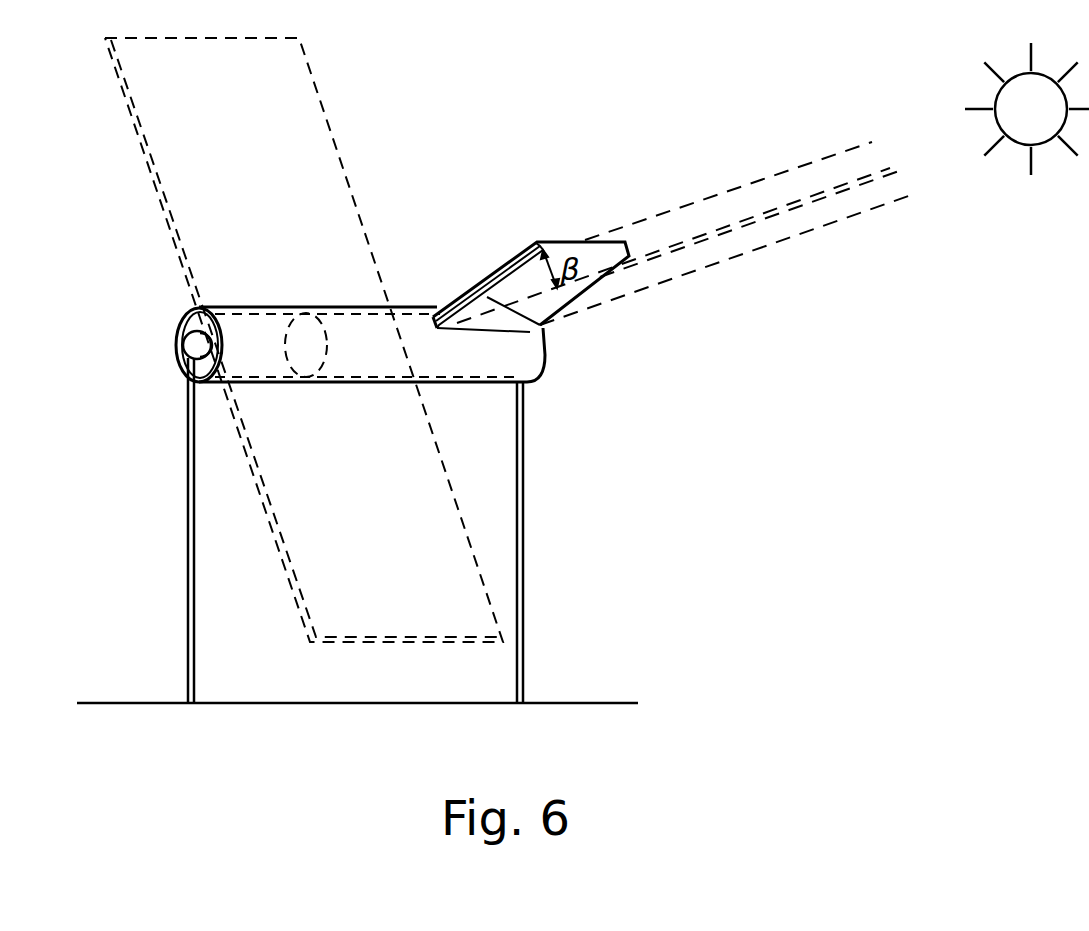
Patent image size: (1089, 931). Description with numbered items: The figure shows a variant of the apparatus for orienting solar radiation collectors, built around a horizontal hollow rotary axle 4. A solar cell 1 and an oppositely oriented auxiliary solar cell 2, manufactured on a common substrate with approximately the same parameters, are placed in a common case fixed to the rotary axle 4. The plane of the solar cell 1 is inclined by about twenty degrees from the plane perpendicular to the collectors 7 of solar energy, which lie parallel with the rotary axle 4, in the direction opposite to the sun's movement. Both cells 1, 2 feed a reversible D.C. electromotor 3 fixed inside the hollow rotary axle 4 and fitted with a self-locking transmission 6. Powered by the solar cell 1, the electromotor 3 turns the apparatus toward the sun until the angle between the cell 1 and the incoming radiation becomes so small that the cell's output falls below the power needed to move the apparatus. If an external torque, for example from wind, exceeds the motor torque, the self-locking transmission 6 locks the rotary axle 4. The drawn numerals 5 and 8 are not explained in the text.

The solar cell 1 is at (545, 328).
The auxiliary solar cell 2 is at (494, 272).
The reversible D.C. electromotor 3 is at (198, 322).
The hollow rotary axle 4 is at (413, 306).
The panel frame 5 is at (560, 242).
The self-locking transmission 6 is at (190, 348).
The collectors of solar energy 7 is at (333, 134).
The support leg 8 is at (186, 543).